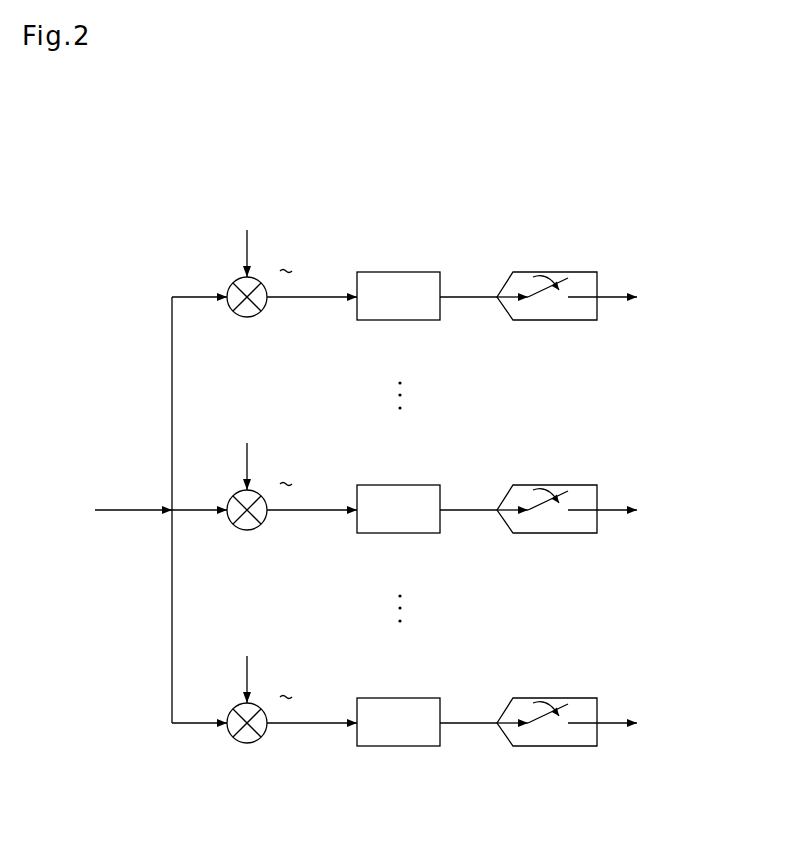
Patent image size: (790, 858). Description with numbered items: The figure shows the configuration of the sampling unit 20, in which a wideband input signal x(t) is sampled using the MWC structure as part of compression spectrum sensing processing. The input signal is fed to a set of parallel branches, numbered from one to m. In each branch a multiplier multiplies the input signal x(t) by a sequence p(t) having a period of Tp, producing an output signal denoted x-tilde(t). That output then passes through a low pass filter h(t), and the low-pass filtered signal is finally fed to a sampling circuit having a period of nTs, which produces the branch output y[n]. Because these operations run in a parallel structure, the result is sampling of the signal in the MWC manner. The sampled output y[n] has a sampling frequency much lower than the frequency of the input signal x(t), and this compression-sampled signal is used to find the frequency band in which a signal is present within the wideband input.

The sampling unit 20 is at (663, 153).